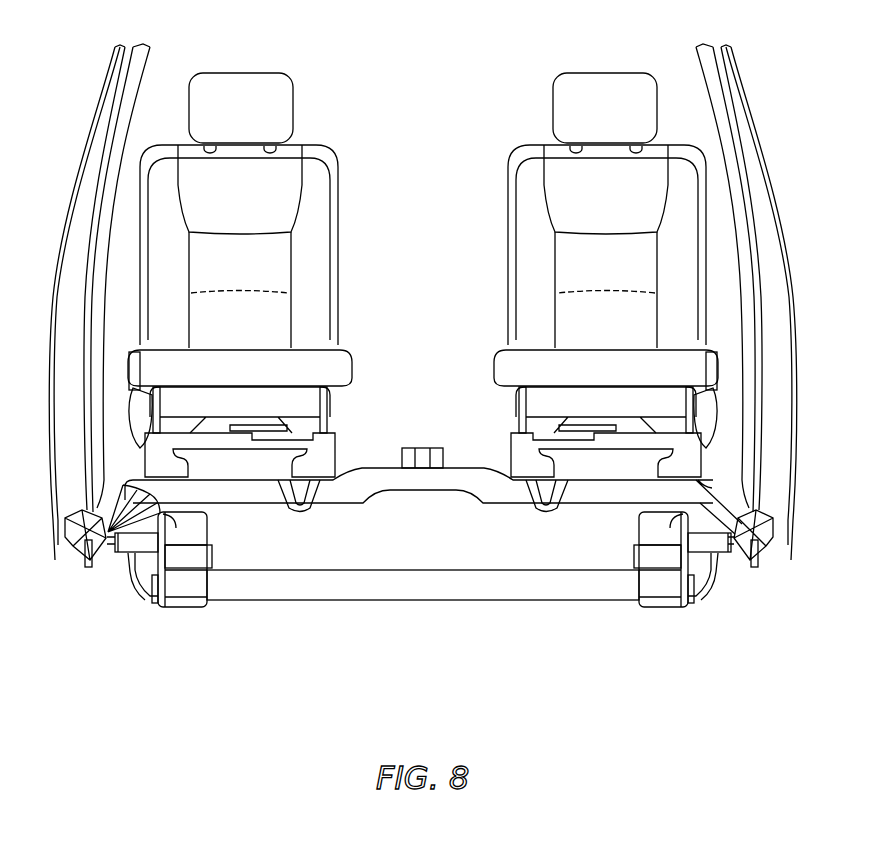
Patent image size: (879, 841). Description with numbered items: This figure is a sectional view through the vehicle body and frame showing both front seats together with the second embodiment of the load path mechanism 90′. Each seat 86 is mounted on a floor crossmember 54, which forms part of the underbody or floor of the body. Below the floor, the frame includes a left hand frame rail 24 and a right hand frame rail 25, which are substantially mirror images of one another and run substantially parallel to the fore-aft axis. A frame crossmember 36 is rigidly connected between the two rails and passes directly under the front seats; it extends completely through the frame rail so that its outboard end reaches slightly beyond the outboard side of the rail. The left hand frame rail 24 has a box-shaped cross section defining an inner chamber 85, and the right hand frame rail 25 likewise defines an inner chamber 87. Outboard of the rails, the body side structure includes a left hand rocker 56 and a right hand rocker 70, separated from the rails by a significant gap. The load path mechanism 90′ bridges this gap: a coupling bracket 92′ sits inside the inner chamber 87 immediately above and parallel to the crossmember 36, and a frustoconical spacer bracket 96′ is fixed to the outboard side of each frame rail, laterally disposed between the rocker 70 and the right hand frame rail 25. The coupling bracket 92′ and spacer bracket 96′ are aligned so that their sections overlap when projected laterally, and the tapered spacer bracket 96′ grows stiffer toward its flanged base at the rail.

The seat 86 is at (508, 212).
The floor crossmember 54 is at (378, 468).
The inner chamber 87 is at (152, 515).
The inner chamber 85 is at (642, 540).
The right hand frame rail 25 is at (207, 522).
The left hand frame rail 24 is at (640, 520).
The frame crossmember 36 is at (367, 561).
The coupling bracket 92′ is at (195, 560).
The spacer bracket 96′ is at (127, 556).
The load path mechanism 90′ is at (195, 618).
The right hand rocker 70 is at (78, 563).
The left hand rocker 56 is at (770, 563).